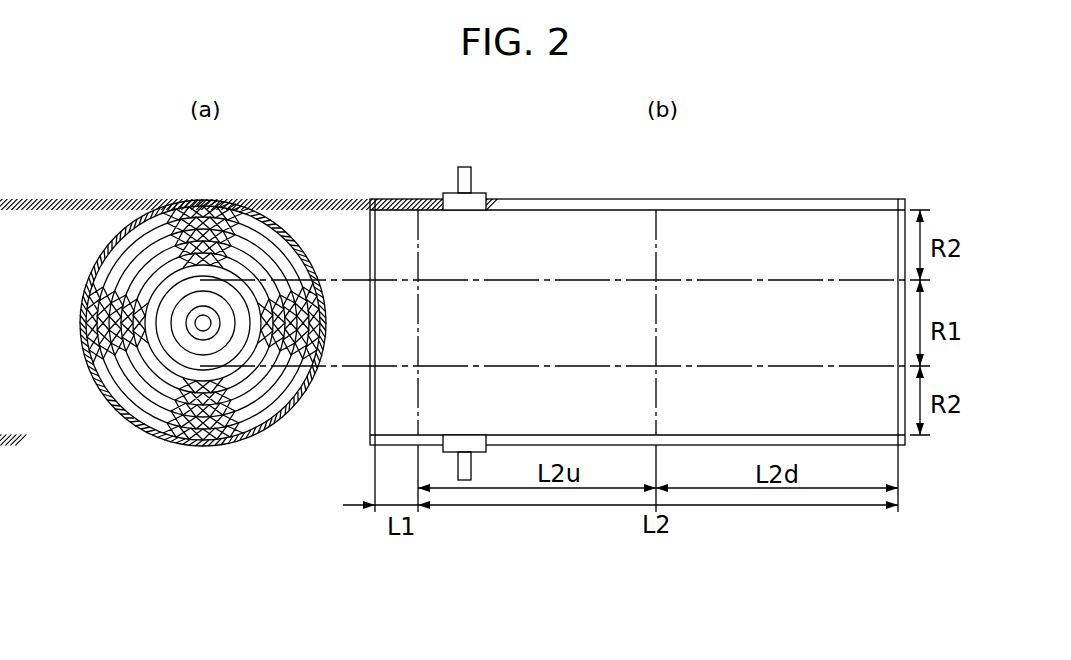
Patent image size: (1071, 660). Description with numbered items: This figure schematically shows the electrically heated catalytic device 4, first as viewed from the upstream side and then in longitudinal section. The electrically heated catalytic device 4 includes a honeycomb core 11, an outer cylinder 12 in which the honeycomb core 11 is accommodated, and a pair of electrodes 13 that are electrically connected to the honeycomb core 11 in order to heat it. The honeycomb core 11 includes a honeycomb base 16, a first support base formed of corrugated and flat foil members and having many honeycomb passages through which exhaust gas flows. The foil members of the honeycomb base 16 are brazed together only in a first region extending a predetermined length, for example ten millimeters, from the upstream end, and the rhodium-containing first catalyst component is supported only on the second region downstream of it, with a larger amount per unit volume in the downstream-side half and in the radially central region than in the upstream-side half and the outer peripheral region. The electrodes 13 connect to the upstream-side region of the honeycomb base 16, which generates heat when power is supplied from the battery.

The electrically heated catalytic device 4 is at (463, 296).
The honeycomb core 11 is at (495, 288).
The outer cylinder 12 is at (133, 222).
The electrodes 13 is at (489, 196).
The honeycomb base 16 is at (264, 210).